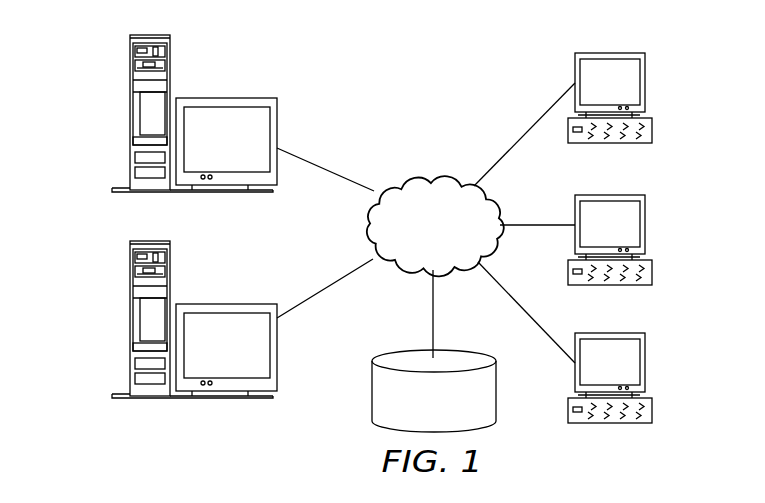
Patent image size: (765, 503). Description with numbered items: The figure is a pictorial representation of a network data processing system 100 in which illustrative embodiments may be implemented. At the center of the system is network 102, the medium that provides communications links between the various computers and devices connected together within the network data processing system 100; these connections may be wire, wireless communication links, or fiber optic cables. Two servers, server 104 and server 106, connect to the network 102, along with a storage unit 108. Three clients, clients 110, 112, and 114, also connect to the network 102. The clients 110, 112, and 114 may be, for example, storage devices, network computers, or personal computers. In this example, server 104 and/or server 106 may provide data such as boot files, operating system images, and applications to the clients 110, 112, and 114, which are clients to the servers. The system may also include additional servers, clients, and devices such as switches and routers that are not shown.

The network data processing system 100 is at (480, 77).
The network 102 is at (405, 178).
The server 104 is at (130, 112).
The server 106 is at (130, 320).
The storage unit 108 is at (372, 400).
The client 110 is at (645, 83).
The client 112 is at (645, 225).
The client 114 is at (645, 363).